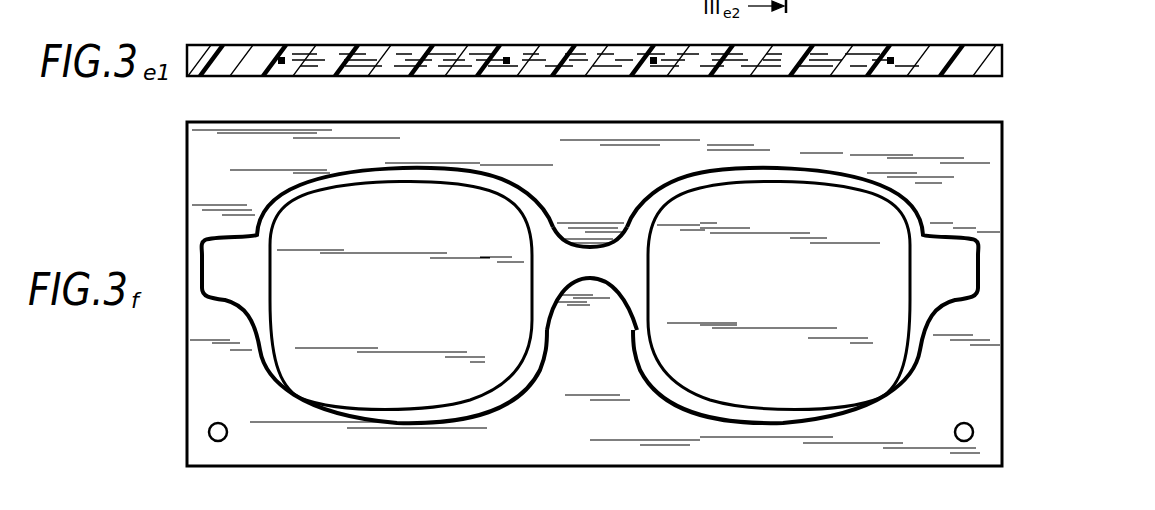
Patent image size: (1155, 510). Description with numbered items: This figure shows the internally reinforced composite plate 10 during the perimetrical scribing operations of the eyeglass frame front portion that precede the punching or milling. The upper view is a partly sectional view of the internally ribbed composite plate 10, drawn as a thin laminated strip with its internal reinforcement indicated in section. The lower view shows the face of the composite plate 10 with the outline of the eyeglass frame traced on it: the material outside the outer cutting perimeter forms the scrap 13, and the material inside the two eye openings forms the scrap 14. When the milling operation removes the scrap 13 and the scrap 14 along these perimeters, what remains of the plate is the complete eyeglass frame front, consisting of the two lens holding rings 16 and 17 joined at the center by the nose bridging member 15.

In FIG. 3E1, the composite plate 10 is at (1003, 61).
In FIG. 3F, the scrap 13 is at (963, 171).
In FIG. 3F, the scrap 14 is at (295, 233).
In FIG. 3F, the nose bridging member 15 is at (592, 260).
In FIG. 3F, the lens holding ring 16 is at (272, 366).
In FIG. 3F, the lens holding ring 17 is at (905, 368).